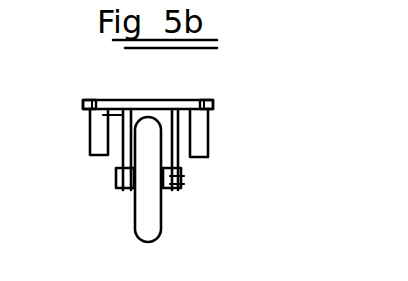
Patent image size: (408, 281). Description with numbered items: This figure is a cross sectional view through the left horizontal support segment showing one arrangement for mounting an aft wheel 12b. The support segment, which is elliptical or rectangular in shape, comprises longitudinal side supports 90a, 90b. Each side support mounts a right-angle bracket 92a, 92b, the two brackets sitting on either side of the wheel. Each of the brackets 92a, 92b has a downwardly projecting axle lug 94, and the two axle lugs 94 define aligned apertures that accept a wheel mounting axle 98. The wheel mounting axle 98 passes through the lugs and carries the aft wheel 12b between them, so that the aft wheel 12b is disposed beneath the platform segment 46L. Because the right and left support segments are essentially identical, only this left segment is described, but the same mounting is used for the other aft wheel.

The aft wheel 12b is at (150, 227).
The platform segment 46L is at (169, 90).
The longitudinal side support 90a is at (94, 133).
The longitudinal side support 90b is at (206, 131).
The right-angle bracket 92a is at (107, 104).
The right-angle bracket 92b is at (204, 103).
The axle lug 94 is at (120, 160).
The wheel mounting axle 98 is at (178, 180).